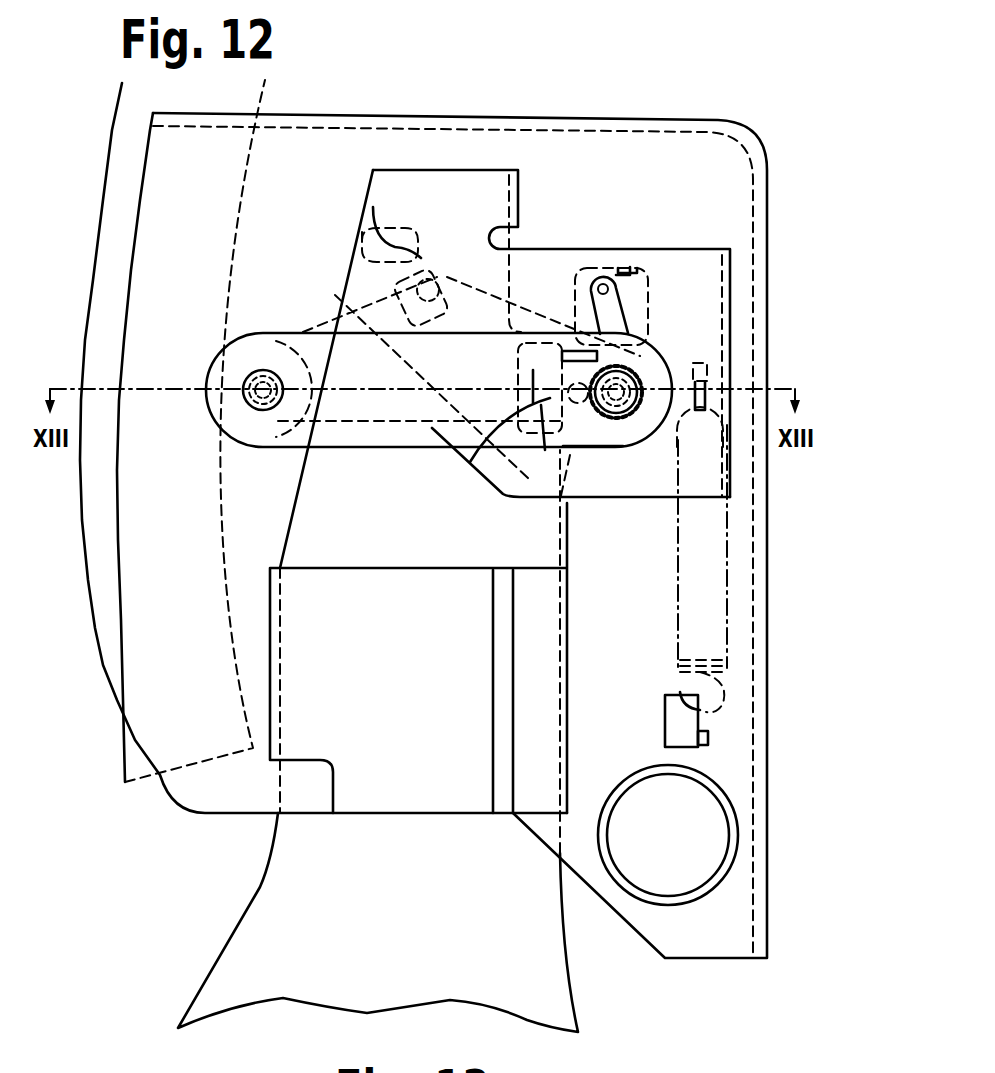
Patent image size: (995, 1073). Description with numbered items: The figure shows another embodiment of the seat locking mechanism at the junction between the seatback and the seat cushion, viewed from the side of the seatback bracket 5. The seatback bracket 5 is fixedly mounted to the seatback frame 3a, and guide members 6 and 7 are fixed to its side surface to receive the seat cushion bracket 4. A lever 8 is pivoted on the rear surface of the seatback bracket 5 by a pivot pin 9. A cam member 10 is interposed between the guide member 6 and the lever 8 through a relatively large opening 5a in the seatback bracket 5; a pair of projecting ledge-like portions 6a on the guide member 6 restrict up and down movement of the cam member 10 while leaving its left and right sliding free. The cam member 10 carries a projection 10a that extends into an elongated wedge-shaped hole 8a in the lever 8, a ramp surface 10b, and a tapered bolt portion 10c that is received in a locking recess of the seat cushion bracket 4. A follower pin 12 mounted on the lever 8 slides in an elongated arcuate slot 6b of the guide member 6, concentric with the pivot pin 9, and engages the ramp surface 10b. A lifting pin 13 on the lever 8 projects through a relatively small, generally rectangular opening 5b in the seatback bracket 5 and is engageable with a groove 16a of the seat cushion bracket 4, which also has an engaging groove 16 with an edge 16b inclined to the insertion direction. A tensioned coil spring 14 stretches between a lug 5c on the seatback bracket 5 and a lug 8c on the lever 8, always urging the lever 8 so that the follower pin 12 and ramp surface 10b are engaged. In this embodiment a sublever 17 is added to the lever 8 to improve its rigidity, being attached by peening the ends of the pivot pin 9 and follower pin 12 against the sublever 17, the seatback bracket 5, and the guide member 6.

The seatback frame 3a is at (97, 627).
The seat cushion bracket 4 is at (258, 887).
The seatback bracket 5 is at (768, 181).
The opening 5a is at (628, 266).
The opening 5b is at (373, 252).
The lug 5c is at (708, 738).
The guide member 6 is at (627, 250).
The projecting ledge-like portions 6a is at (572, 334).
The elongated arcuate slot 6b is at (600, 276).
The guide member 7 is at (372, 569).
The lever 8 is at (376, 421).
The elongated wedge-shaped hole 8a is at (552, 455).
The lug 8c is at (715, 366).
The pivot pin 9 is at (262, 410).
The cam member 10 is at (542, 364).
The projection 10a is at (563, 348).
The ramp surface 10b is at (580, 473).
The bolt portion 10c is at (535, 402).
The follower pin 12 is at (640, 372).
The lifting pin 13 is at (424, 257).
The tensioned coil spring 14 is at (712, 633).
The engaging groove 16 is at (404, 267).
The groove 16a is at (396, 238).
The inclined edge 16b is at (429, 289).
The sublever 17 is at (328, 446).